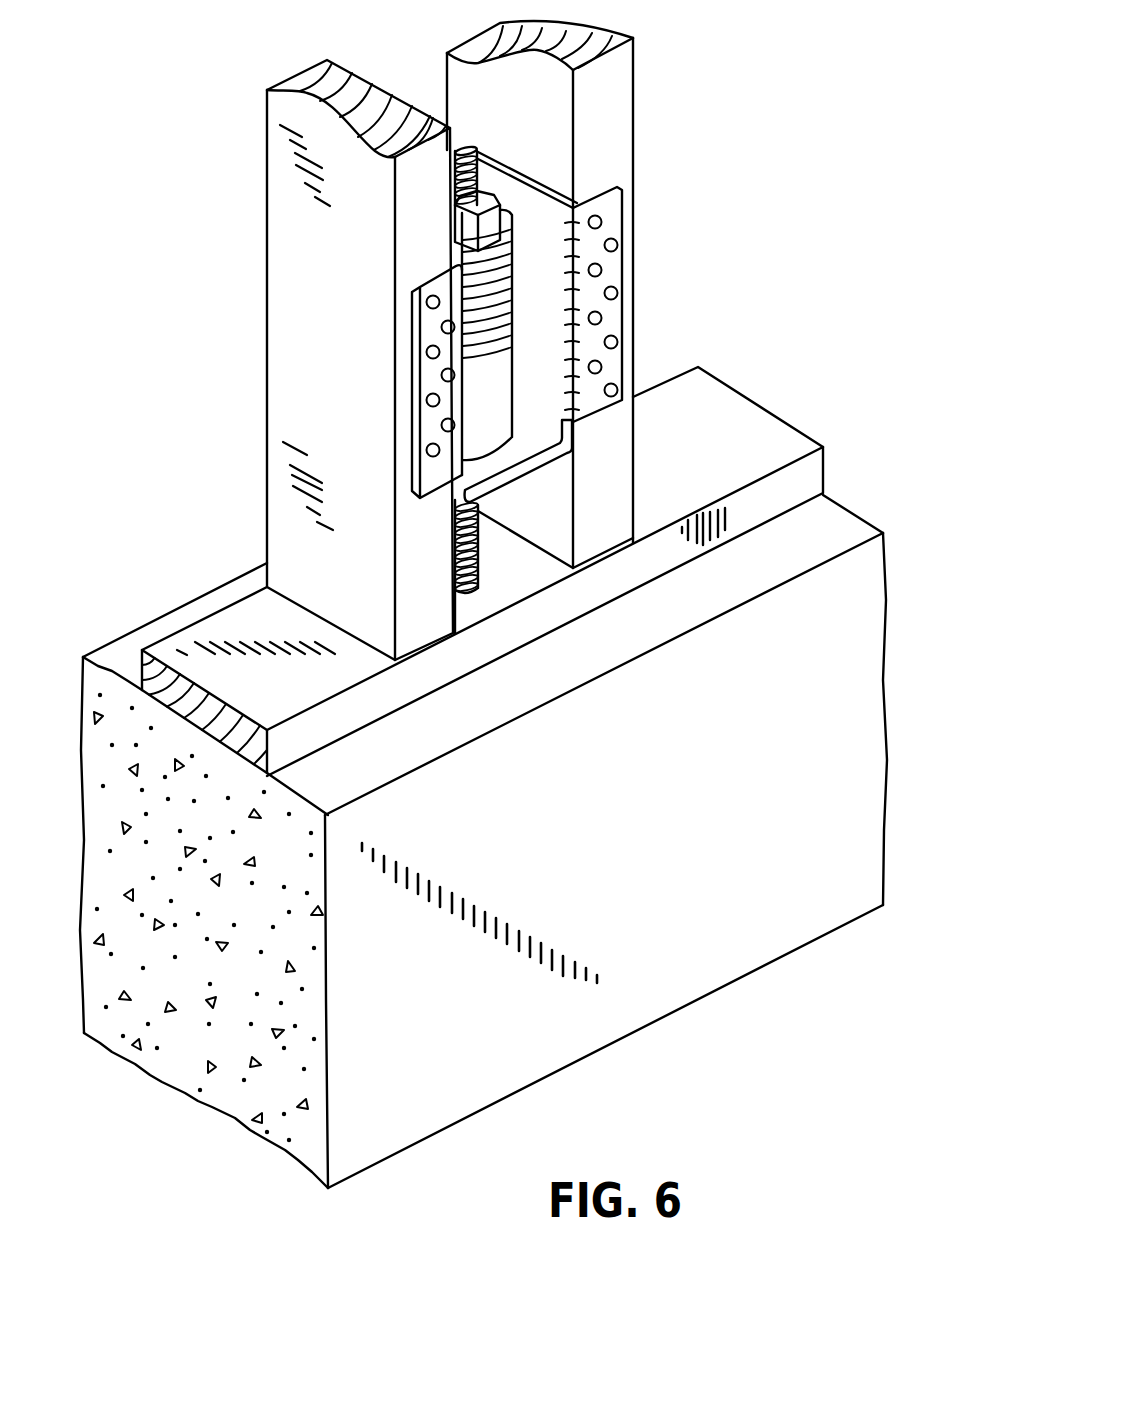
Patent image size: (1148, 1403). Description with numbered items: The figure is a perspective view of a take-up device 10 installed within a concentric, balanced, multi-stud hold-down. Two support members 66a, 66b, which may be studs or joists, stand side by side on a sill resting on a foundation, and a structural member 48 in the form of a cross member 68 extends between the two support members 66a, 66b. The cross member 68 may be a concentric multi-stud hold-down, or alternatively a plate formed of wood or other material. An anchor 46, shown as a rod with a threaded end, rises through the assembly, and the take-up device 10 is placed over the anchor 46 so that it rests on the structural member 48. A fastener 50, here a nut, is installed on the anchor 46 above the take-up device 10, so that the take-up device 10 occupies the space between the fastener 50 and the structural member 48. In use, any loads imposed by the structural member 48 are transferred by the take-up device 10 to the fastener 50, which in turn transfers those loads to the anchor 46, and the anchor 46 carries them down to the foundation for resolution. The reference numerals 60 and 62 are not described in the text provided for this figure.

The take-up device 10 is at (513, 368).
The anchor 46 is at (460, 157).
The structural member 48 is at (525, 433).
The fastener 50 is at (483, 197).
The foundation 60 is at (842, 526).
The sill plate 62 is at (723, 408).
The support member 66a is at (417, 197).
The support member 66b is at (623, 155).
The cross member 68 is at (630, 219).